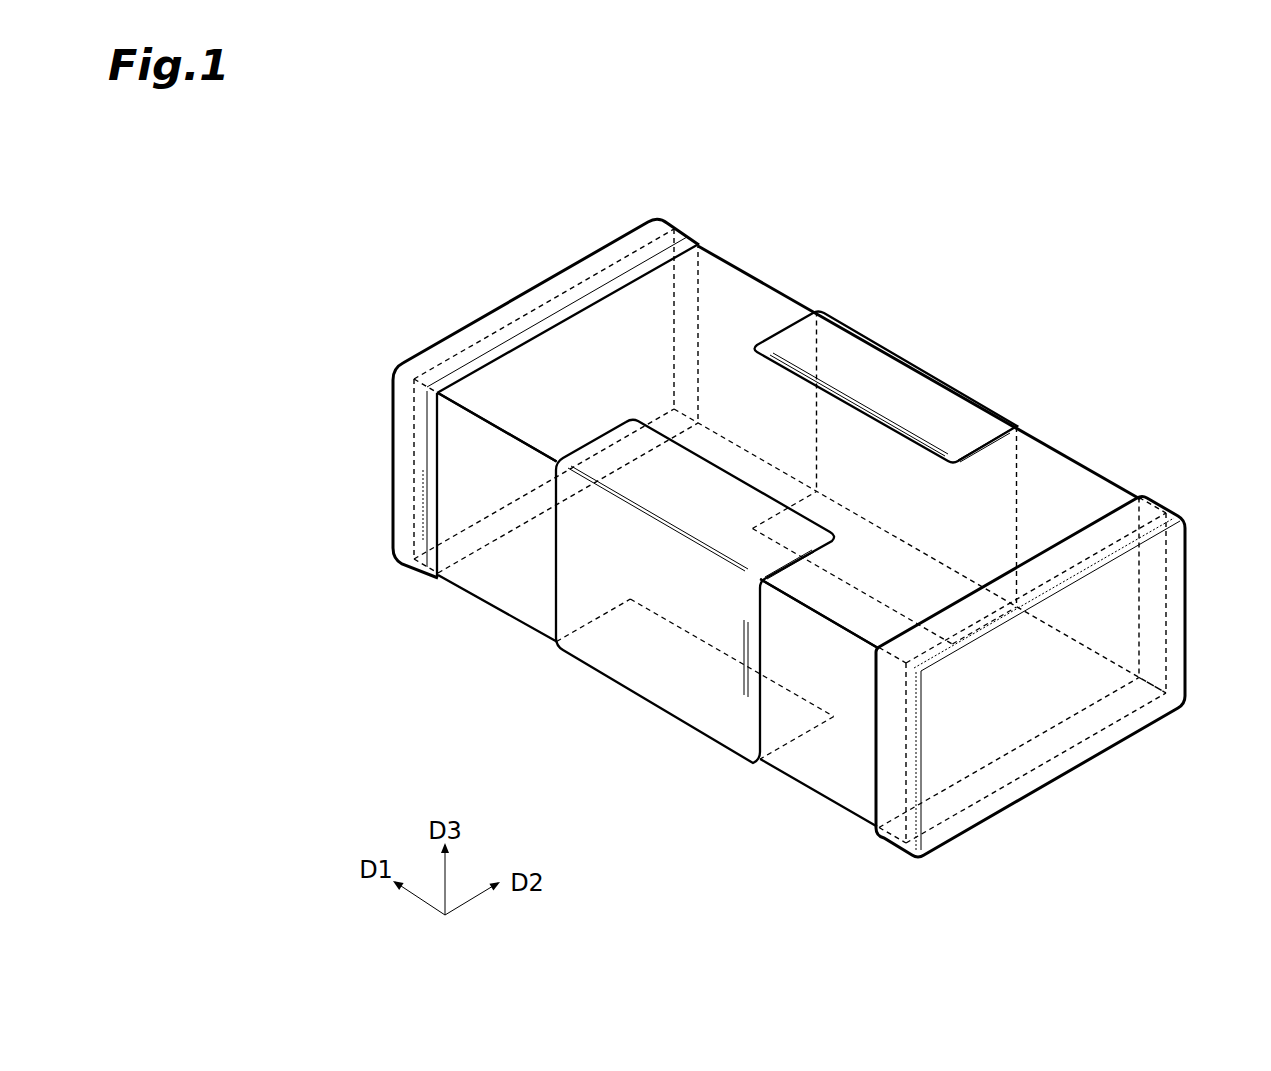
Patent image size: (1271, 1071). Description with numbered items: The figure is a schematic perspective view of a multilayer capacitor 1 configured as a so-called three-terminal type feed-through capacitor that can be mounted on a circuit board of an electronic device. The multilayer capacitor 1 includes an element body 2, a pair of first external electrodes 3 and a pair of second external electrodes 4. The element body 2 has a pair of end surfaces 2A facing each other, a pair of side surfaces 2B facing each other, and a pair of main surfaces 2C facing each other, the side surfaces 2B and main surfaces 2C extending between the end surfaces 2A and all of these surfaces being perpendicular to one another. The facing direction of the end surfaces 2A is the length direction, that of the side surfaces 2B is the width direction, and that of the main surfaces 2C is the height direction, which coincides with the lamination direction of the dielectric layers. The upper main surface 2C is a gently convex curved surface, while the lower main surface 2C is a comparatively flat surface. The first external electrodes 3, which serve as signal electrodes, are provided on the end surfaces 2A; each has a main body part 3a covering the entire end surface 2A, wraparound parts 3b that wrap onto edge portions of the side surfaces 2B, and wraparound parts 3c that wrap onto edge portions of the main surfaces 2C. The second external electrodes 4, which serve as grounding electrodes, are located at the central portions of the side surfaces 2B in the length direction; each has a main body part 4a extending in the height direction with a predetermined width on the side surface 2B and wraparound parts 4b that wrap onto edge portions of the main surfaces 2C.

The multilayer capacitor 1 is at (1185, 322).
The element body 2 is at (777, 282).
The end surface 2A is at (500, 397).
The side surface 2B is at (1090, 543).
The main surface 2C is at (735, 300).
The first external electrode 3 is at (520, 283).
The main body part 3a is at (590, 340).
The wraparound part 3b is at (683, 297).
The wraparound part 3c is at (613, 258).
The second external electrode 4 is at (900, 333).
The main body part 4a is at (997, 497).
The wraparound part 4b is at (837, 347).